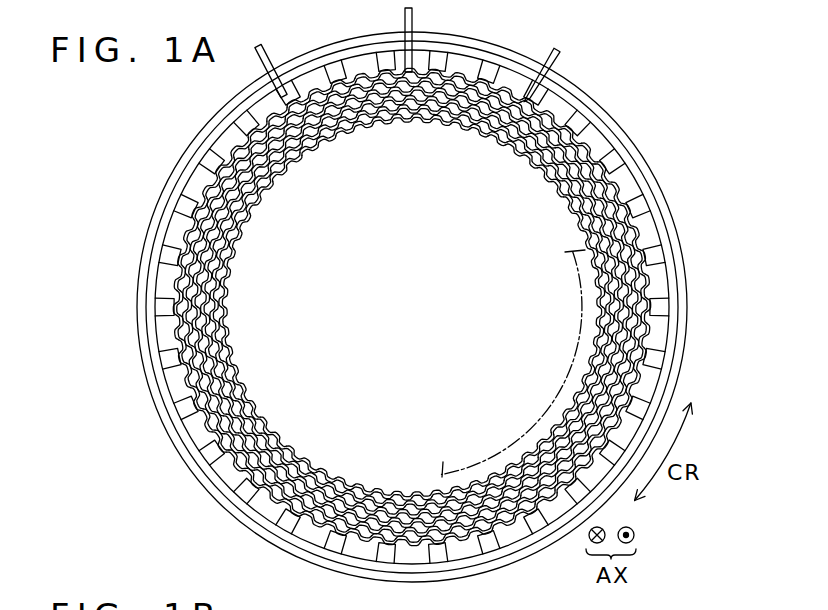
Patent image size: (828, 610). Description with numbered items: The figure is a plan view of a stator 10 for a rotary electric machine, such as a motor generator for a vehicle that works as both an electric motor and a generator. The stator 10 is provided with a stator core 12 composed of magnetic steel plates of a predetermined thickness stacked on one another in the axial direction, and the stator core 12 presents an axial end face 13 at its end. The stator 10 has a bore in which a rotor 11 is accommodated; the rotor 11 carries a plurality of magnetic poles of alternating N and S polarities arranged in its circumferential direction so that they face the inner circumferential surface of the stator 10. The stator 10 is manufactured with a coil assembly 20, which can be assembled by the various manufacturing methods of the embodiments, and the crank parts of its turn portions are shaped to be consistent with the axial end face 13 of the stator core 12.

The stator 10 is at (445, 296).
The rotor 11 is at (560, 386).
The stator core 12 is at (633, 170).
The axial end face 13 is at (683, 254).
The coil assembly 20 is at (620, 331).